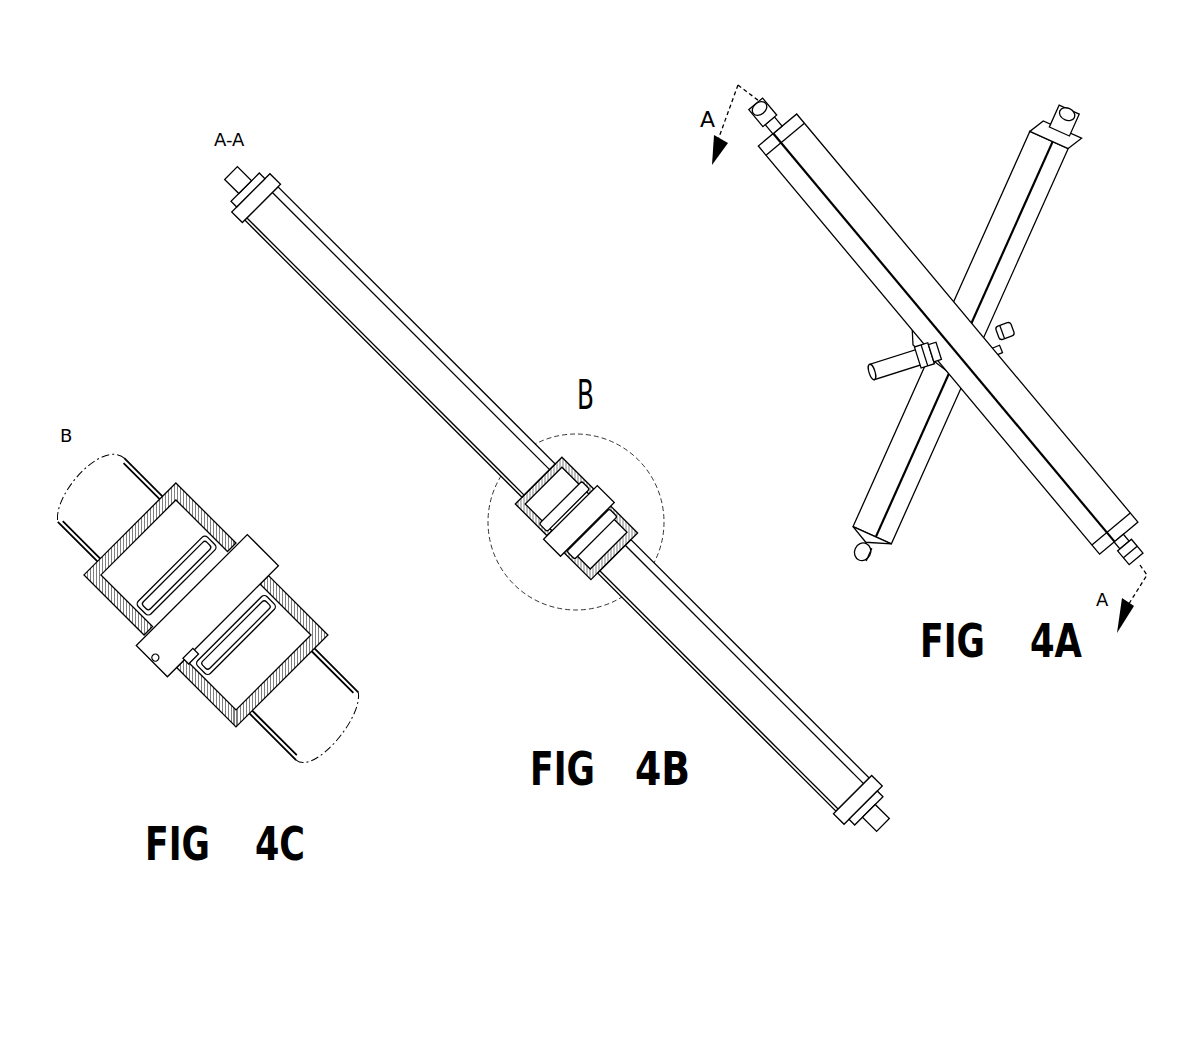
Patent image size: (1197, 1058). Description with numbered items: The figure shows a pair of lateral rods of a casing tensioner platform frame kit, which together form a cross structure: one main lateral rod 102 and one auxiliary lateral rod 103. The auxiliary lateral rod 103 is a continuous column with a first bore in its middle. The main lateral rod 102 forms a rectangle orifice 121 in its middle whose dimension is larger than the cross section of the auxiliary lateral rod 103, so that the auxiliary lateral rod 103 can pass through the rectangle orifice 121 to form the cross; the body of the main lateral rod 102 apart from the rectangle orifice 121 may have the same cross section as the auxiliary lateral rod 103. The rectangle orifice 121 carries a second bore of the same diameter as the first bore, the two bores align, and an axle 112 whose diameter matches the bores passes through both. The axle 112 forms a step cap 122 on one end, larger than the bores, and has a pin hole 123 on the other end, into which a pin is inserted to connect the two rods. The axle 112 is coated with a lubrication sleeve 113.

In FIG. 4A, the main lateral rod 102 is at (866, 212).
In FIG. 4B, the main lateral rod 102 is at (432, 350).
In FIG. 4A, the auxiliary lateral rod 103 is at (1036, 228).
In FIG. 4B, the auxiliary lateral rod 103 is at (580, 553).
In FIG. 4A, the axle 112 is at (873, 358).
In FIG. 4B, the axle 112 is at (603, 490).
In FIG. 4A, the lubrication sleeve 113 is at (921, 367).
In FIG. 4C, the lubrication sleeve 113 is at (190, 654).
In FIG. 4A, the rectangle orifice 121 is at (953, 377).
In FIG. 4B, the rectangle orifice 121 is at (627, 515).
In FIG. 4C, the rectangle orifice 121 is at (307, 613).
In FIG. 4C, the step cap 122 is at (264, 548).
In FIG. 4C, the pin hole 123 is at (152, 662).